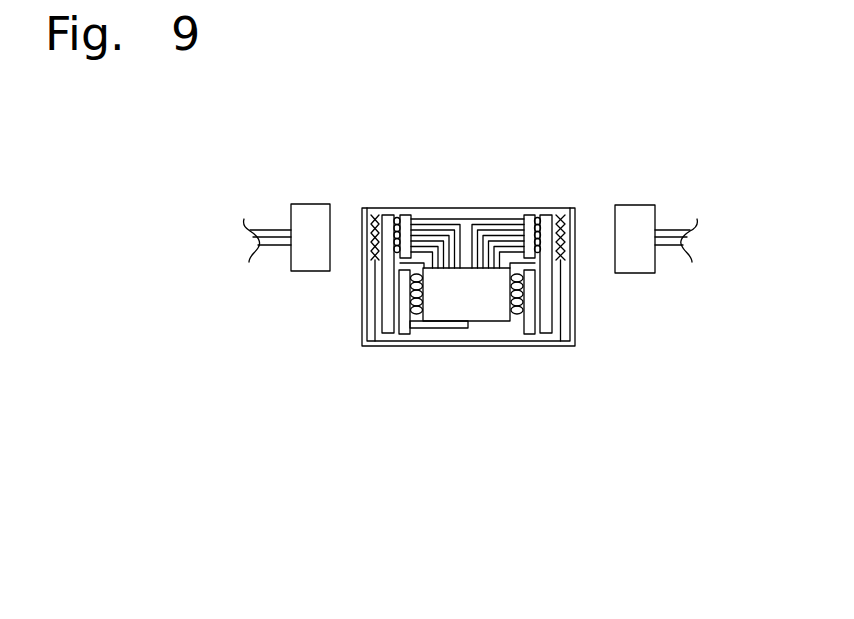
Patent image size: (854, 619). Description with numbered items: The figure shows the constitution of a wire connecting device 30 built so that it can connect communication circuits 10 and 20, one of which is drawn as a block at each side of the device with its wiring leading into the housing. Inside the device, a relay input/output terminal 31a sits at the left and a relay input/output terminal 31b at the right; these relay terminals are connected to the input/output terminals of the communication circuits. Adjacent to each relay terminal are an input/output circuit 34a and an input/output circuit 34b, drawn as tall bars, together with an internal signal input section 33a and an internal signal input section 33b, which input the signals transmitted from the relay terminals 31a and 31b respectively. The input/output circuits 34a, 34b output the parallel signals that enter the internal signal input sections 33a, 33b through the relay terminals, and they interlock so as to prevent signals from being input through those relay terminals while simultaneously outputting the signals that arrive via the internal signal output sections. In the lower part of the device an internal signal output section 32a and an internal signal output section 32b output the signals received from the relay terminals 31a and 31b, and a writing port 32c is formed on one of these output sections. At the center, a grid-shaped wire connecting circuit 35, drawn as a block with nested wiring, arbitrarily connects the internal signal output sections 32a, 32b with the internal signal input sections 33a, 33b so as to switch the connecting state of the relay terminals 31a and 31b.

The communication circuit 10 is at (288, 218).
The communication circuit 20 is at (656, 231).
The wire connecting device 30 is at (575, 347).
The relay input/output terminal 31a is at (375, 211).
The relay input/output terminal 31b is at (566, 211).
The internal signal output section 32a is at (402, 295).
The internal signal output section 32b is at (526, 336).
The writing port 32c is at (399, 335).
The internal signal input section 33a is at (407, 212).
The internal signal input section 33b is at (528, 212).
The input/output circuit 34a is at (388, 212).
The input/output circuit 34b is at (547, 212).
The grid-shaped wire connecting circuit 35 is at (461, 267).